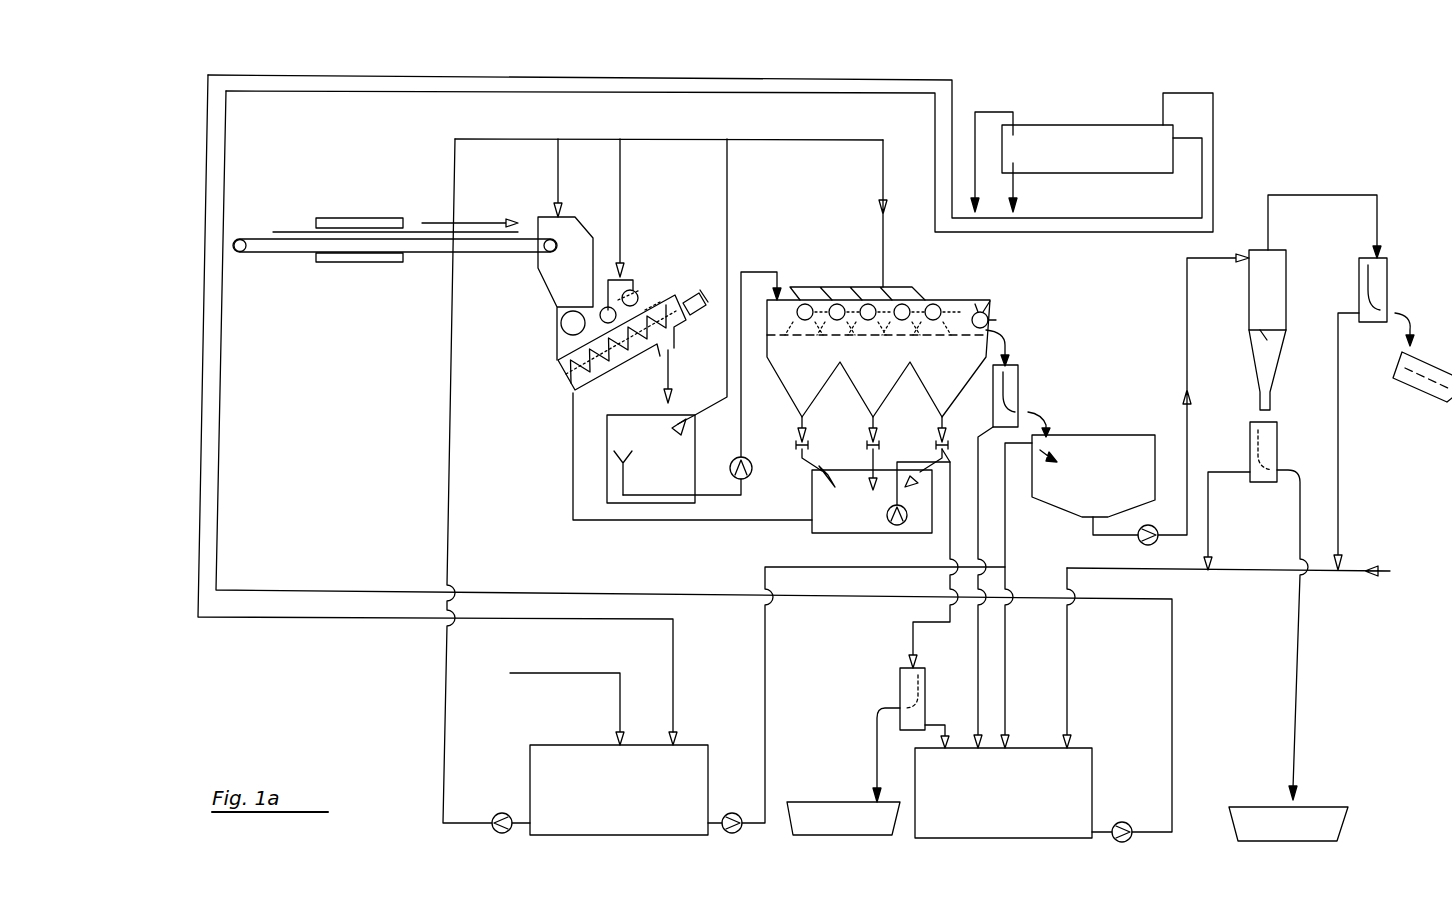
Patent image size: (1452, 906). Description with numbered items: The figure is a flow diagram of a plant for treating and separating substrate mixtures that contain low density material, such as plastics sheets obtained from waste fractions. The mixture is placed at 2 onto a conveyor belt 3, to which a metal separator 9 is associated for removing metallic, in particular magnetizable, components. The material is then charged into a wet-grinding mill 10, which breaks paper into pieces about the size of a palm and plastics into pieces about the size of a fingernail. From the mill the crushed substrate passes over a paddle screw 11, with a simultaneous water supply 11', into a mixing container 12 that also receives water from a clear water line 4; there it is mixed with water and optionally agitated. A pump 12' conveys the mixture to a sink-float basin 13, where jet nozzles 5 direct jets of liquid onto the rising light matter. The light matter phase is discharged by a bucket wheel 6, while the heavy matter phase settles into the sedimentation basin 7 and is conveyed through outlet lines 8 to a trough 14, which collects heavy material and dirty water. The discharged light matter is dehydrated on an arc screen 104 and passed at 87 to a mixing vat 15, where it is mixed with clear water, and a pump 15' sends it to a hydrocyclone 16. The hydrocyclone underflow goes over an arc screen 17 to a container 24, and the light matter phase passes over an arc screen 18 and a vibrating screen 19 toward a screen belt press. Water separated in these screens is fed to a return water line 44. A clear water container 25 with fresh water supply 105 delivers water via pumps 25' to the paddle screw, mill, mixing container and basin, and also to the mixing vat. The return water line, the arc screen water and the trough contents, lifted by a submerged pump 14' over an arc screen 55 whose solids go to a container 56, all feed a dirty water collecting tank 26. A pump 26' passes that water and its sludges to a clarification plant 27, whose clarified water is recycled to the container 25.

The charging point 2 is at (264, 219).
The conveyor belt 3 is at (296, 255).
The clear water line 4 is at (697, 140).
The jet nozzles 5 is at (936, 302).
The bucket wheel 6 is at (992, 313).
The sedimentation basin 7 is at (818, 383).
The outlet lines 8 is at (868, 453).
The metal separator 9 is at (363, 222).
The wet-grinding mill 10 is at (570, 265).
The paddle screw 11 is at (633, 347).
The water supply 11' is at (651, 260).
The mixing container 12 is at (651, 459).
The pump 12' is at (761, 484).
The sink-float basin 13 is at (908, 333).
The trough 14 is at (872, 501).
The submerged pump 14' is at (899, 514).
The mixing vat 15 is at (1093, 476).
The pump 15' is at (1119, 546).
The hydrocyclone 16 is at (1248, 322).
The arc screen 17 is at (1248, 446).
The arc screen 18 is at (1357, 293).
The vibrating screen 19 is at (1410, 378).
The container 24 is at (1258, 812).
The container 25 is at (619, 790).
The pumps 25' is at (498, 797).
The collecting tank 26 is at (1003, 793).
The pump 26' is at (1117, 804).
The clarification plant 27 is at (1067, 142).
The return water line 44 is at (1228, 600).
The arc screen 55 is at (928, 675).
The container 56 is at (825, 812).
The transfer point 87 is at (1050, 421).
The arc screen 104 is at (1020, 372).
The fresh water supply 105 is at (594, 673).